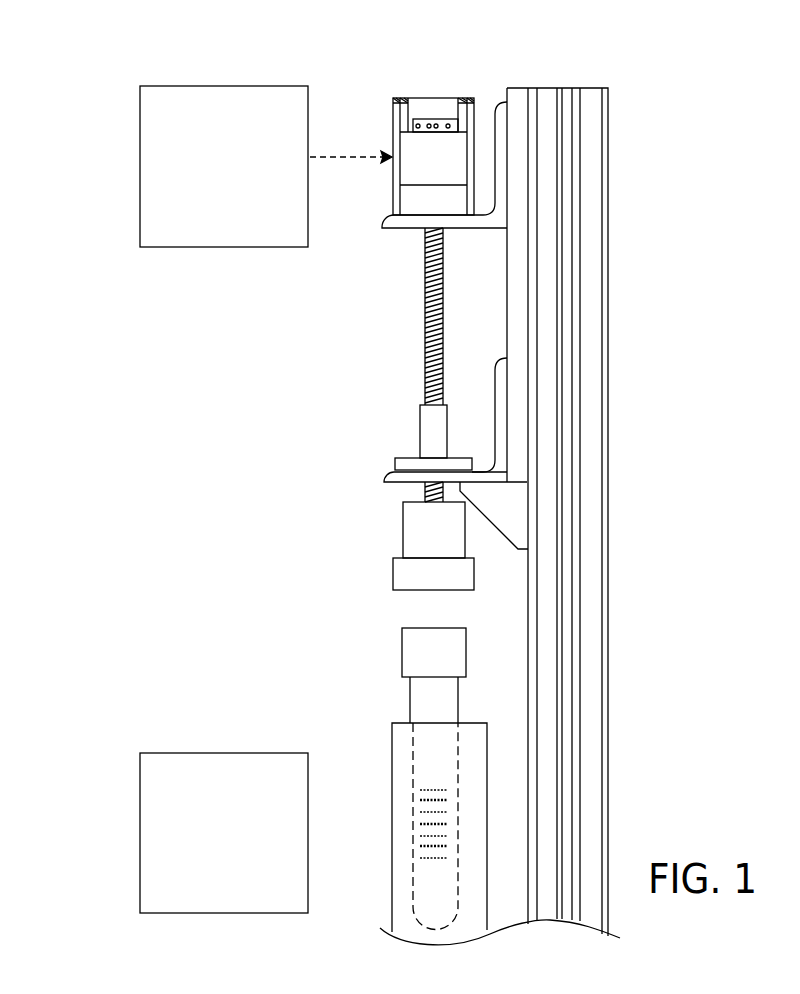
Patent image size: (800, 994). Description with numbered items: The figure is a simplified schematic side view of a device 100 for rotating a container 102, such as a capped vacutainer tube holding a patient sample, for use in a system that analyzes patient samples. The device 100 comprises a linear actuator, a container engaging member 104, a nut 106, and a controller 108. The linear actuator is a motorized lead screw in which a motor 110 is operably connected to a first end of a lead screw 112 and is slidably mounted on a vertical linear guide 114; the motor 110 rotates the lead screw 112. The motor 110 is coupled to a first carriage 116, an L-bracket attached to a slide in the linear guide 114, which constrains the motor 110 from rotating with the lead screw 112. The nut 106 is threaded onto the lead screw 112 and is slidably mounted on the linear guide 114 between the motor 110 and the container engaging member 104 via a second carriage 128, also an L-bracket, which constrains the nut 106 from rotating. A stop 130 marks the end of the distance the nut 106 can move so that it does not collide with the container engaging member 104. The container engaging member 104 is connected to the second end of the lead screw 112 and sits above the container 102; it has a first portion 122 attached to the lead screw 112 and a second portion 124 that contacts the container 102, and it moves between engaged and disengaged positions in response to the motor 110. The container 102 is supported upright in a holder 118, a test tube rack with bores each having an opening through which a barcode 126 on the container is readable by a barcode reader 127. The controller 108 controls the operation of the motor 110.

The device 100 is at (638, 98).
The container 102 is at (402, 651).
The container engaging member 104 is at (305, 502).
The nut 106 is at (395, 461).
The controller 108 is at (140, 132).
The motor 110 is at (430, 98).
The lead screw 112 is at (425, 309).
The vertical linear guide 114 is at (520, 88).
The first carriage 116 is at (501, 102).
The holder 118 is at (392, 740).
The first portion 122 is at (403, 532).
The second portion 124 is at (393, 580).
The barcode 126 is at (448, 777).
The barcode reader 127 is at (140, 797).
The second carriage 128 is at (498, 388).
The stop 130 is at (518, 512).